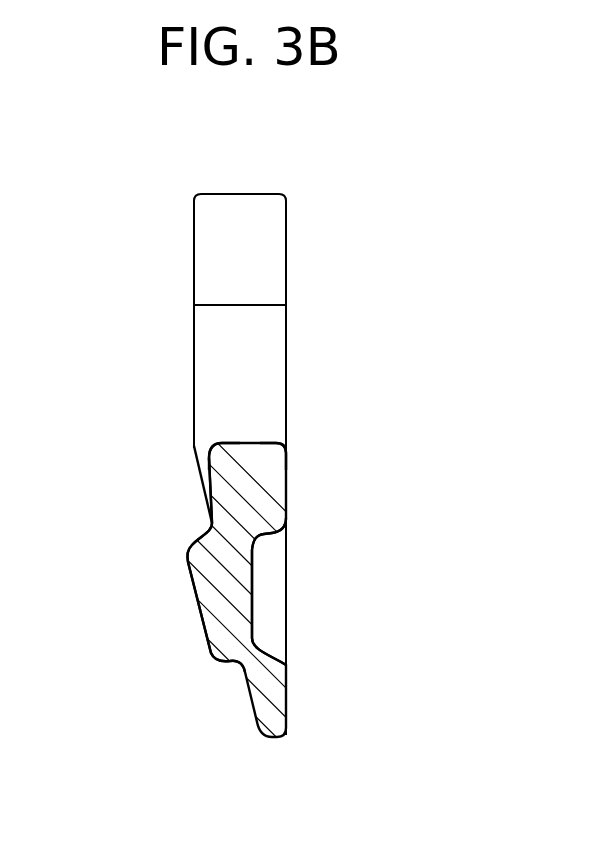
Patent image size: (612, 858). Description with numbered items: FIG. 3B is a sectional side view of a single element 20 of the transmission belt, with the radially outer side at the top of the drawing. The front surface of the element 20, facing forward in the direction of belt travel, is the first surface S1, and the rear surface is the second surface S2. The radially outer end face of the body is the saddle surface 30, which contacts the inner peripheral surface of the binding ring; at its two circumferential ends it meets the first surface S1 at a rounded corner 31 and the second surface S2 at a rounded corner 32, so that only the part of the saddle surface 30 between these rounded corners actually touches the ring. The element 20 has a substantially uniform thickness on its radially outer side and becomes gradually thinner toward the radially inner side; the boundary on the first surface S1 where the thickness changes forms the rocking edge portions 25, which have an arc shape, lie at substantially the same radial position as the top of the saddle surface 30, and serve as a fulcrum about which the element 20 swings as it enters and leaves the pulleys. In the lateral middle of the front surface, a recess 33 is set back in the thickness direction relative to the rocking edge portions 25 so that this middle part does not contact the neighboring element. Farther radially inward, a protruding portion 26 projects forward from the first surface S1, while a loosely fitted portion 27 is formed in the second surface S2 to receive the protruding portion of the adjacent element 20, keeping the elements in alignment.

The element 20 is at (242, 418).
The first surface S1 is at (193, 413).
The second surface S2 is at (291, 420).
The rocking edge portions 25 is at (194, 449).
The saddle surface 30 is at (356, 605).
The corner 31 is at (200, 452).
The corner 32 is at (287, 440).
The recess 33 is at (208, 468).
The loosely fitted portion 27 is at (253, 606).
The protruding portion 26 is at (198, 627).